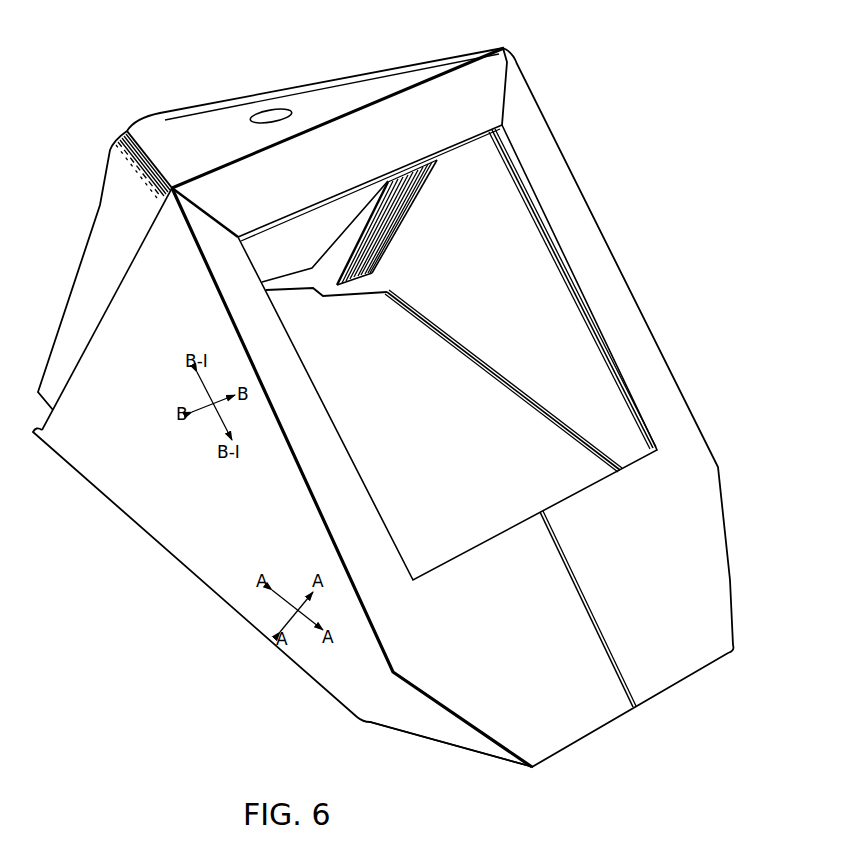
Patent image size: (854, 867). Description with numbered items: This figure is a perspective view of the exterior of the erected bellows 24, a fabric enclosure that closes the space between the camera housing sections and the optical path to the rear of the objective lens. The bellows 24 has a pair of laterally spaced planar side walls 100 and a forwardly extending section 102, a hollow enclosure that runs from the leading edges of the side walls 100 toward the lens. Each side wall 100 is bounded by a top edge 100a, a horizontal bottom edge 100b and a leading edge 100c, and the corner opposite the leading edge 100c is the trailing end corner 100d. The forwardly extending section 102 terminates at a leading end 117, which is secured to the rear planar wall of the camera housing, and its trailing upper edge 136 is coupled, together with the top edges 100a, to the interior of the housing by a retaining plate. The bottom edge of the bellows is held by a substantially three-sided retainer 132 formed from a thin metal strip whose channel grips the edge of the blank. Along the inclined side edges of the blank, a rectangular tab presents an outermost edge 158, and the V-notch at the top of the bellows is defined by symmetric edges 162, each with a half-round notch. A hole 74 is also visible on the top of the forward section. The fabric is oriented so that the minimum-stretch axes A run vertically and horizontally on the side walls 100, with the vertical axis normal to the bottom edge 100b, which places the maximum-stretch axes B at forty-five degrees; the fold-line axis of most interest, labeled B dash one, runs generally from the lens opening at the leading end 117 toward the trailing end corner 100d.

The bellows 24 is at (567, 120).
The aperture in top panel 74 is at (278, 110).
The side walls 100 is at (500, 300).
The top edge 100a is at (290, 447).
The bottom edge 100b is at (478, 343).
The leading edge 100c is at (420, 200).
The trailing end corner 100d is at (370, 690).
The forwardly extending section 102 is at (228, 88).
The leading end 117 is at (127, 130).
The retainer 132 is at (355, 285).
The trailing upper edge 136 is at (418, 83).
The outermost edge 158 is at (588, 602).
The edges 162 is at (322, 117).